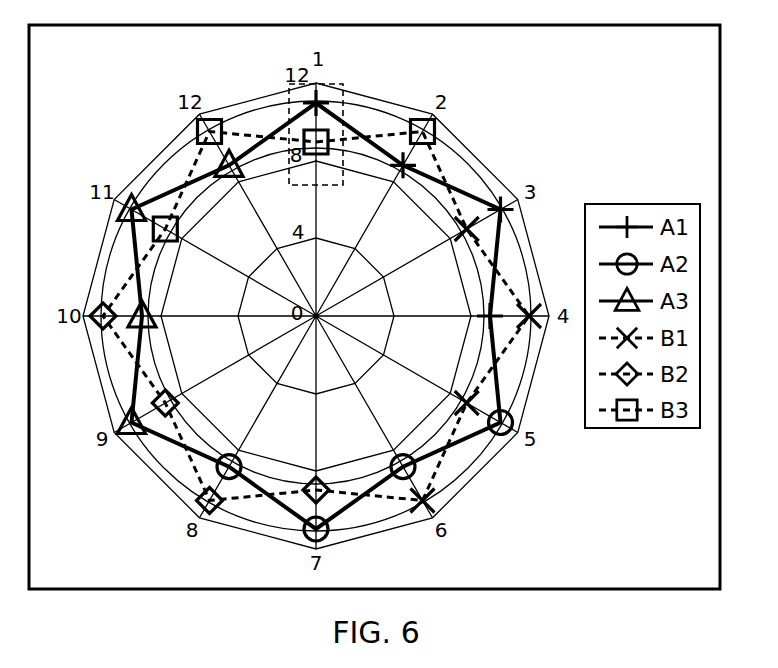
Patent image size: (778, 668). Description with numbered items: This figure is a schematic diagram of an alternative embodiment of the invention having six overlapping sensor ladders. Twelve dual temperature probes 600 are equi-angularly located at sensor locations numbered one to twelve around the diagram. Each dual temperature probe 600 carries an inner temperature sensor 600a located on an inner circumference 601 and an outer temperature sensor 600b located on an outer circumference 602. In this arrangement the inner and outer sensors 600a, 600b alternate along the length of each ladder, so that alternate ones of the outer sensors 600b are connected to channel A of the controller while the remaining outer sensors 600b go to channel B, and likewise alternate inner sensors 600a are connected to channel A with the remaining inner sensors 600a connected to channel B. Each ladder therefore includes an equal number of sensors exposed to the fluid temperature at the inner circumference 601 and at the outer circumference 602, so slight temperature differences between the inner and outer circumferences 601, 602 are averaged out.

The dual temperature probe 600 is at (338, 85).
The inner temperature sensor 600a is at (290, 153).
The outer temperature sensor 600b is at (302, 142).
The inner circumference 601 is at (445, 207).
The outer circumference 602 is at (455, 150).